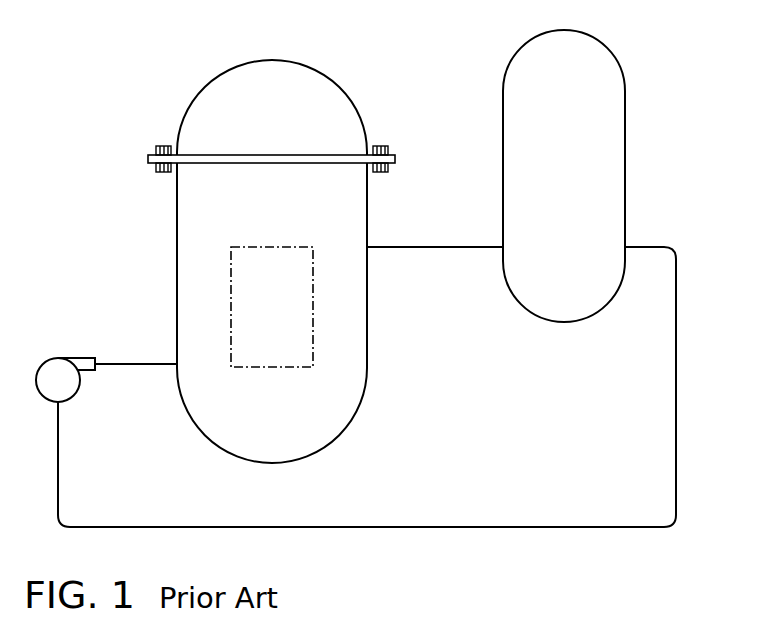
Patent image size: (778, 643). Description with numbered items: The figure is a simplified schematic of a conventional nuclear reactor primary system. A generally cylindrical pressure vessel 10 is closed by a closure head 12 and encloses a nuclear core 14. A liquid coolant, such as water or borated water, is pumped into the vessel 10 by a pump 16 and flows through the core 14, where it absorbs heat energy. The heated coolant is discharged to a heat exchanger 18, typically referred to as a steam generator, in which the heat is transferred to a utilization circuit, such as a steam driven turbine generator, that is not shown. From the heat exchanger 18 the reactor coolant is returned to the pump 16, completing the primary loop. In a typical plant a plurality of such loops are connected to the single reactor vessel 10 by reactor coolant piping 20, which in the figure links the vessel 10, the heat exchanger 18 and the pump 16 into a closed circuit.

The pressure vessel 10 is at (272, 307).
The closure head 12 is at (188, 110).
The nuclear core 14 is at (206, 307).
The pump 16 is at (55, 357).
The heat exchanger 18 is at (625, 120).
The reactor coolant piping 20 is at (676, 467).